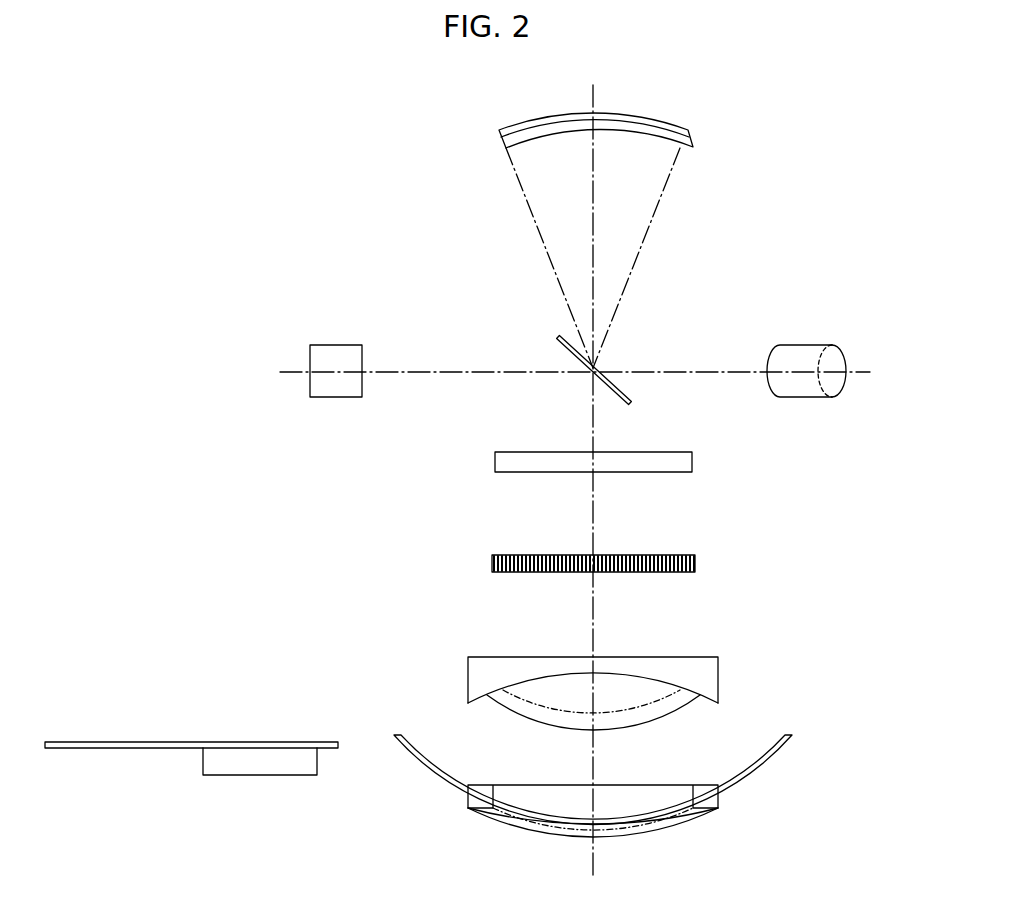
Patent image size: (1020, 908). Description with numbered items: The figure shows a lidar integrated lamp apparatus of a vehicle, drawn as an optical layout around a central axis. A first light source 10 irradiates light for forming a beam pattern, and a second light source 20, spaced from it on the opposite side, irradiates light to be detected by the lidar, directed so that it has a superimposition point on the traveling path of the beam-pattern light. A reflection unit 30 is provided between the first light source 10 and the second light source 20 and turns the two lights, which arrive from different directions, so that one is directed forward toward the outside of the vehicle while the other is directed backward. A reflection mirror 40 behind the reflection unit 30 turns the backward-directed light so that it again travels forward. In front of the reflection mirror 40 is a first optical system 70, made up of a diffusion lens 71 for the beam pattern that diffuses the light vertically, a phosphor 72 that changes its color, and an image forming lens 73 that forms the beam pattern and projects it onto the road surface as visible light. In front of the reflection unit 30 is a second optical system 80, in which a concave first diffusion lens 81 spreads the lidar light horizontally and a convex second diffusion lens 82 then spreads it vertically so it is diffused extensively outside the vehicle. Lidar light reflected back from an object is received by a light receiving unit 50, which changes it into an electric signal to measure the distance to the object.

The first light source 10 is at (807, 347).
The second light source 20 is at (340, 352).
The reflection unit 30 is at (632, 401).
The reflection mirror 40 is at (678, 141).
The light receiving unit 50 is at (265, 765).
The first optical system 70 is at (370, 482).
The diffusion lens for a beam pattern 71 is at (495, 462).
The phosphor 72 is at (492, 563).
The image forming lens 73 is at (517, 790).
The second optical system 80 is at (858, 672).
The first diffusion lens 81 is at (712, 670).
The second diffusion lens 82 is at (792, 737).